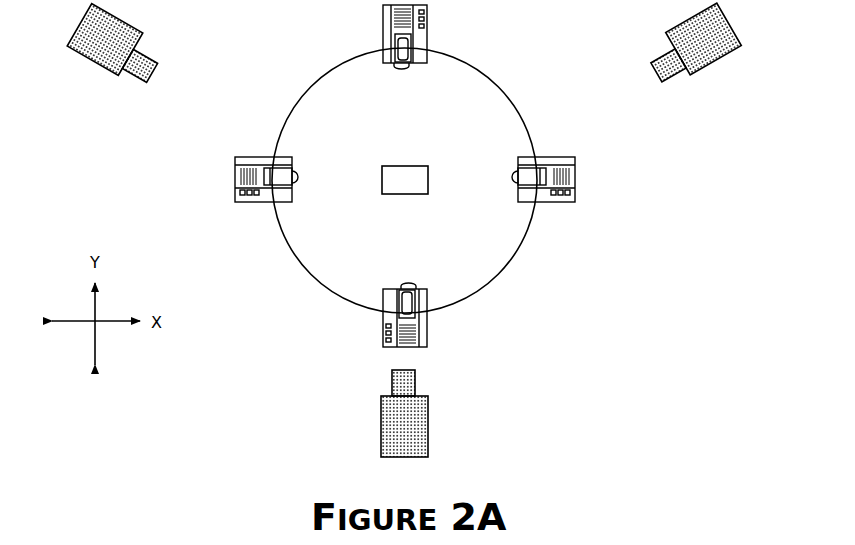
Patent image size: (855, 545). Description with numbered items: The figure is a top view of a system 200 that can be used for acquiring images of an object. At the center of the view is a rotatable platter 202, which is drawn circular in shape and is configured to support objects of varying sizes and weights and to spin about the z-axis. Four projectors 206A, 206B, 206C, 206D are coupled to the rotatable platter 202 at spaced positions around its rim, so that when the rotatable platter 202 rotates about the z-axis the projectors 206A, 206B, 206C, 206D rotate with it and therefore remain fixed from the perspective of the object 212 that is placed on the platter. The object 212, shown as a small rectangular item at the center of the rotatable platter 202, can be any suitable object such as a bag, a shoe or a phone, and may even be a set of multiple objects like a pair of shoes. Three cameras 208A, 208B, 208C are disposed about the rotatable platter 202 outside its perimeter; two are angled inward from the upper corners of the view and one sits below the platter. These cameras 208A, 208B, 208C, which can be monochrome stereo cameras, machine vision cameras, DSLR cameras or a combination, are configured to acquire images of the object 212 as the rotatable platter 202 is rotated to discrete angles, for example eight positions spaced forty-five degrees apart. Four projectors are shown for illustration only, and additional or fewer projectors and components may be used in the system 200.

The system 200 is at (291, 60).
The rotatable platter 202 is at (505, 268).
The projector 206A is at (575, 192).
The projector 206B is at (235, 197).
The projector 206C is at (427, 15).
The projector 206D is at (427, 338).
The camera 208A is at (720, 62).
The camera 208B is at (85, 59).
The camera 208C is at (428, 427).
The object 212 is at (428, 180).